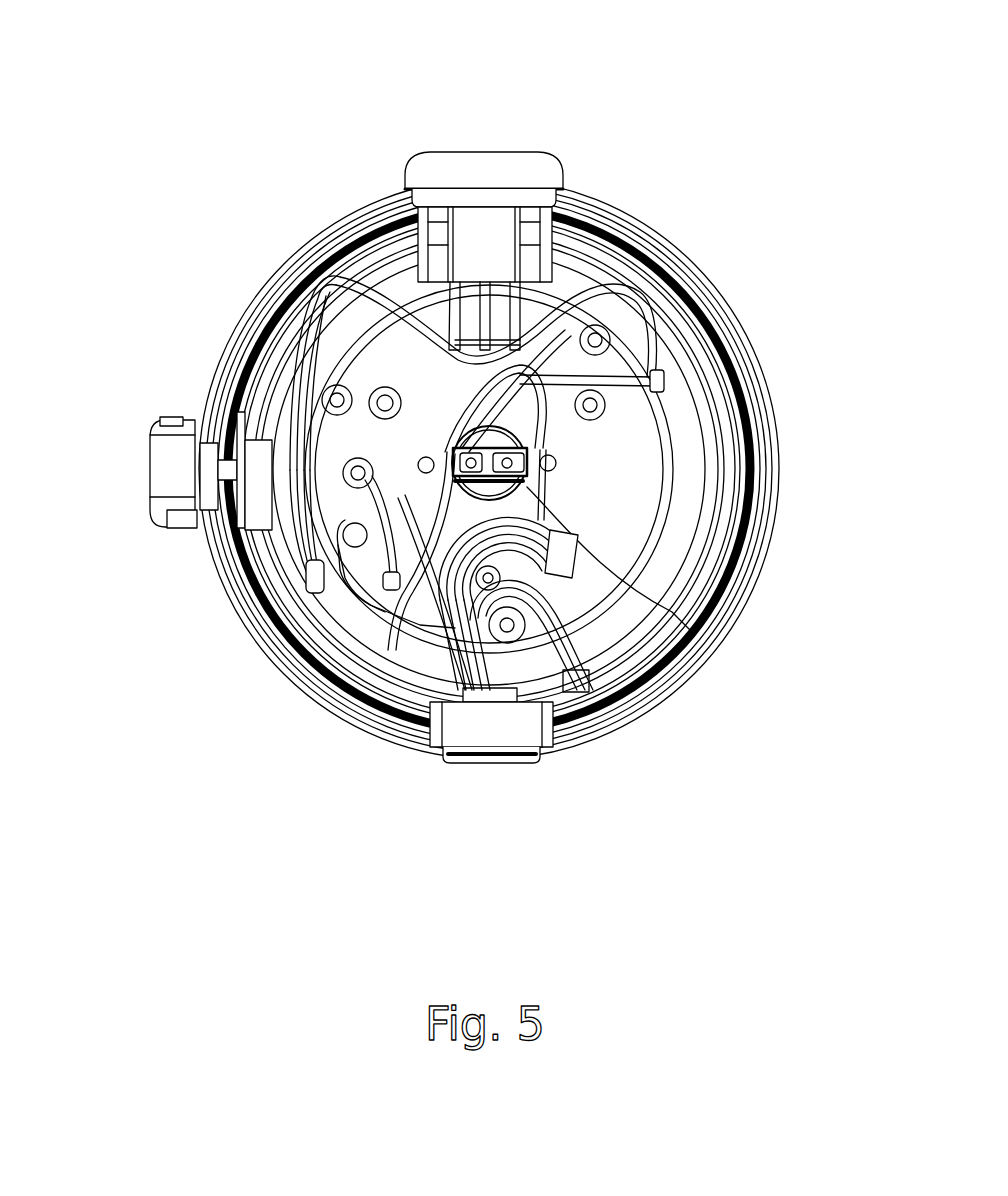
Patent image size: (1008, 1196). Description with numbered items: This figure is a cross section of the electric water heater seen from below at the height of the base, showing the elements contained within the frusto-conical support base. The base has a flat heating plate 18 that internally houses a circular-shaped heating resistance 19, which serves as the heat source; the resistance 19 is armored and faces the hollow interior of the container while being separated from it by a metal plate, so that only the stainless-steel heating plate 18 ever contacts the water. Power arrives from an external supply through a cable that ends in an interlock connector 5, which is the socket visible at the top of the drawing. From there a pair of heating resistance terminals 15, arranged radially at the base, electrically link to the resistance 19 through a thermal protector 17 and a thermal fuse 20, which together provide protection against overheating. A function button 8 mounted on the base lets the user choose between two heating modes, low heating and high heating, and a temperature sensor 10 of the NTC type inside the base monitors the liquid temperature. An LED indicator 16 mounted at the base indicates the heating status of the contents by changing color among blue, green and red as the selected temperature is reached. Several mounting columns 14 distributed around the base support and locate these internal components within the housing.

The interlock connector 5 is at (463, 168).
The function button 8 is at (165, 468).
The temperature sensor 10 is at (330, 553).
The mounting column 14 is at (615, 340).
The heating resistance terminal 15 is at (390, 650).
The LED indicator 16 is at (510, 735).
The thermal protector 17 is at (530, 487).
The heating plate 18 is at (640, 205).
The heating resistance 19 is at (328, 342).
The thermal fuse 20 is at (690, 470).